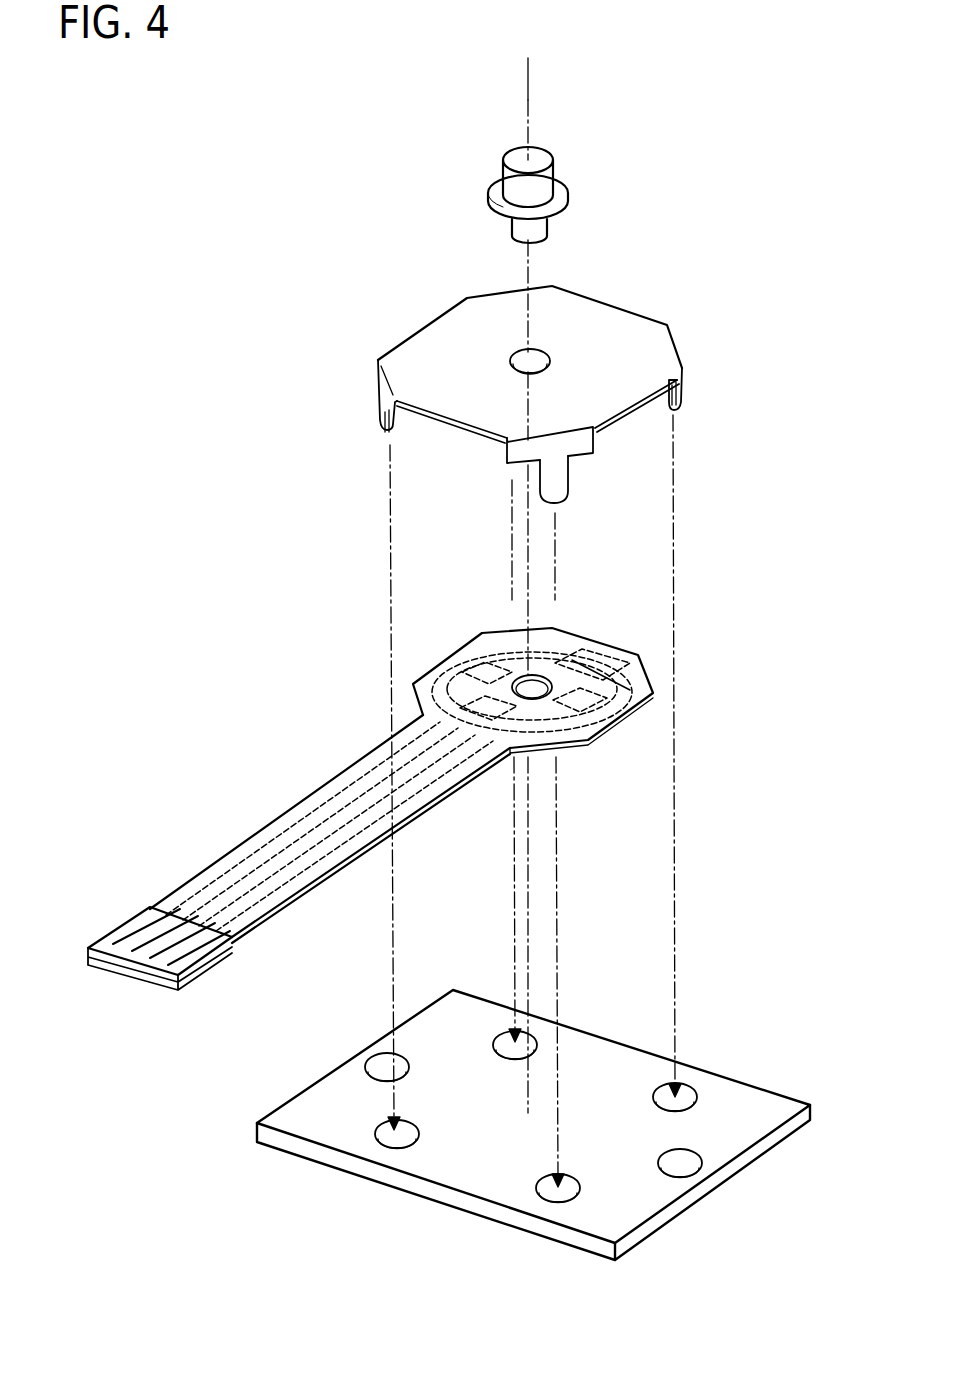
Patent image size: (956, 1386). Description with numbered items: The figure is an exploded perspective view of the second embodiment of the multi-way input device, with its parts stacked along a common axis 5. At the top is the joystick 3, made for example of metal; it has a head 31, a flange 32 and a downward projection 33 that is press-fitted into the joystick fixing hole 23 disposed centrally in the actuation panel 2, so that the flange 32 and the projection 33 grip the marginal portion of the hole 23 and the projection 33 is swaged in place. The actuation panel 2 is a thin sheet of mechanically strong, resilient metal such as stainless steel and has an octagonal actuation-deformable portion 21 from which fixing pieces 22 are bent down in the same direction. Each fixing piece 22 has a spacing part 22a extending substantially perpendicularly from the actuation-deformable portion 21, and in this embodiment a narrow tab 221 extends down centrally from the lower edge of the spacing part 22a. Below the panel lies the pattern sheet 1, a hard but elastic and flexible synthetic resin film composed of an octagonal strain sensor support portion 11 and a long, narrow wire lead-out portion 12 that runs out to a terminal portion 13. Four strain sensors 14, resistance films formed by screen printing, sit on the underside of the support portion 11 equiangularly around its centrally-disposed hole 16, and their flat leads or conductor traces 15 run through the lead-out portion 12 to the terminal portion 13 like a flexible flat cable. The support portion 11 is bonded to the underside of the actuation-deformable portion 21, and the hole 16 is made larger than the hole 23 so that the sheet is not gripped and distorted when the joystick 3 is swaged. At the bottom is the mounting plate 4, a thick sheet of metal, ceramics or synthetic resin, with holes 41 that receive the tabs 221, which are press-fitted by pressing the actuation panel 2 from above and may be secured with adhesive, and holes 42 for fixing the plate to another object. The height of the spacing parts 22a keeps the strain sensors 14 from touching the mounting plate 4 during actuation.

The pattern sheet 1 is at (375, 801).
The actuation panel 2 is at (539, 398).
The joystick 3 is at (529, 193).
The mounting plate 4 is at (493, 1125).
The axis 5 is at (528, 98).
The strain sensor support portion 11 is at (460, 690).
The wire lead-out portion 12 is at (340, 780).
The terminal portion 13 is at (175, 970).
The strain sensor 14 is at (595, 710).
The conductor traces 15 is at (300, 882).
The centrally-disposed hole 16 is at (520, 680).
The actuation-deformable portion 21 is at (585, 318).
The fixing piece 22 is at (649, 482).
The spacing part 22a is at (585, 437).
The tab 221 is at (560, 483).
The joystick fixing hole 23 is at (513, 357).
The joystick head 31 is at (518, 164).
The flange 32 is at (497, 201).
The downward projection 33 is at (520, 234).
The hole 41 is at (397, 1143).
The hole 42 is at (383, 1060).